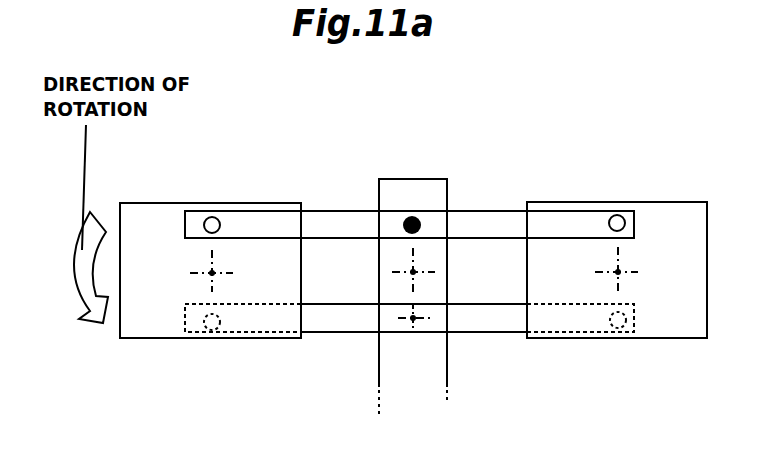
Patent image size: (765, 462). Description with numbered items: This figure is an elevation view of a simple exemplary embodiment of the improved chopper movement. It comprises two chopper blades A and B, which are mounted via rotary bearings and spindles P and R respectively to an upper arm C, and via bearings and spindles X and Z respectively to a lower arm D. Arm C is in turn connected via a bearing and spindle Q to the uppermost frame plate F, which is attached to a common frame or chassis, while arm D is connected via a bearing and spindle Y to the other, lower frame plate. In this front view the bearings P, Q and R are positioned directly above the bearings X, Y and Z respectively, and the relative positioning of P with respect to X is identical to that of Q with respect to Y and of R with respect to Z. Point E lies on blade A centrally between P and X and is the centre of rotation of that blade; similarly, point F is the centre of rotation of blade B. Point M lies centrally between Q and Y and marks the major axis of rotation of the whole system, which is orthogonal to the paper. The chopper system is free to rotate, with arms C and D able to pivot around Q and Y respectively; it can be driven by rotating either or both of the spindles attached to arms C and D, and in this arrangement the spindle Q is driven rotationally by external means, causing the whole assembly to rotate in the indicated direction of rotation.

The chopper blade A is at (163, 242).
The chopper blade B is at (660, 260).
The arm C is at (483, 222).
The arm D is at (480, 317).
The centre of rotation of blade A E is at (211, 271).
The uppermost frame plate / centre of rotation of blade B F is at (398, 195).
The major axis of rotation M is at (400, 267).
The rotary bearing and spindle P is at (210, 222).
The bearing/spindle Q is at (417, 210).
The rotary bearing and spindle R is at (613, 213).
The bearing/spindle X is at (215, 323).
The bearing/spindle Y is at (410, 322).
The bearing/spindle Z is at (615, 323).